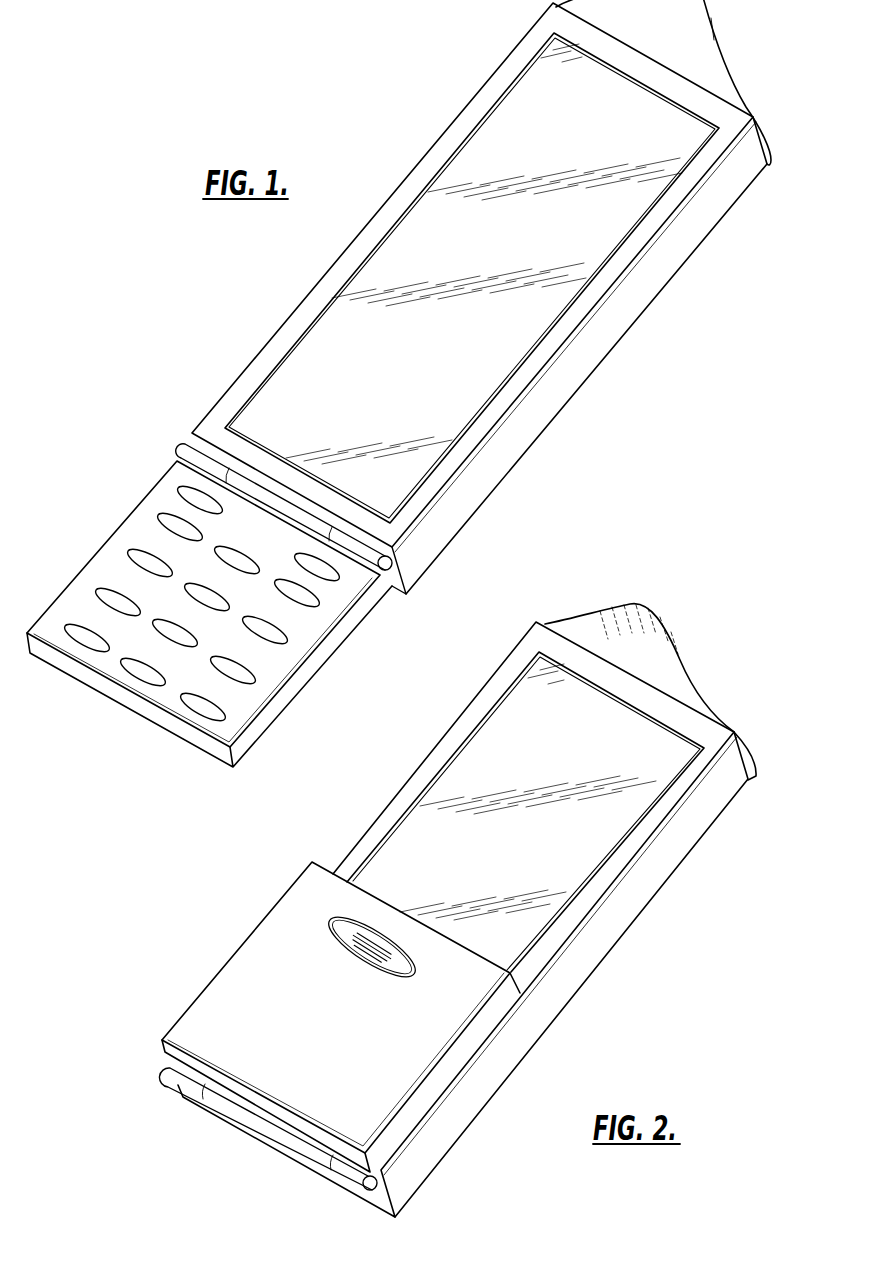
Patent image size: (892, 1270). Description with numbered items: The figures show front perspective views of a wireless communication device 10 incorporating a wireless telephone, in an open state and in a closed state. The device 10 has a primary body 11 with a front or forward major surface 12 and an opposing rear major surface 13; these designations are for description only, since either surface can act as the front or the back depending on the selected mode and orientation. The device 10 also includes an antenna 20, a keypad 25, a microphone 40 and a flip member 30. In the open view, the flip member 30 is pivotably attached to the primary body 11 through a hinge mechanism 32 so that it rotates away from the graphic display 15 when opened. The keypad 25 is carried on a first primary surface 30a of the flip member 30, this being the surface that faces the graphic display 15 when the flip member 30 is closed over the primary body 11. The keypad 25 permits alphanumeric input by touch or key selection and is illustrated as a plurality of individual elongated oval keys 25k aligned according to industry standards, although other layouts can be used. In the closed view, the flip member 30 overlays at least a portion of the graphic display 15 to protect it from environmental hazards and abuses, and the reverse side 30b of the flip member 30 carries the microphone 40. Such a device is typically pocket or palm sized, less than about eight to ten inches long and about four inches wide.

In FIG. 1, the wireless communication device 10 is at (681, 313).
In FIG. 2, the wireless communication device 10 is at (140, 990).
In FIG. 1, the primary body 11 is at (721, 210).
In FIG. 2, the primary body 11 is at (463, 919).
In FIG. 1, the front or forward major surface 12 is at (479, 372).
In FIG. 1, the rear major surface 13 is at (586, 383).
In FIG. 1, the graphic display 15 is at (506, 147).
In FIG. 2, the graphic display 15 is at (636, 773).
In FIG. 1, the antenna 20 is at (697, 43).
In FIG. 2, the antenna 20 is at (643, 613).
In FIG. 1, the keypad 25 is at (180, 525).
In FIG. 1, the elongated oval keys 25k is at (147, 678).
In FIG. 1, the flip member 30 is at (333, 637).
In FIG. 2, the flip member 30 is at (252, 972).
In FIG. 1, the first primary surface 30a is at (268, 673).
In FIG. 2, the reverse side 30b is at (302, 945).
In FIG. 1, the hinge mechanism 32 is at (297, 508).
In FIG. 2, the hinge mechanism 32 is at (268, 1129).
In FIG. 2, the microphone 40 is at (363, 968).